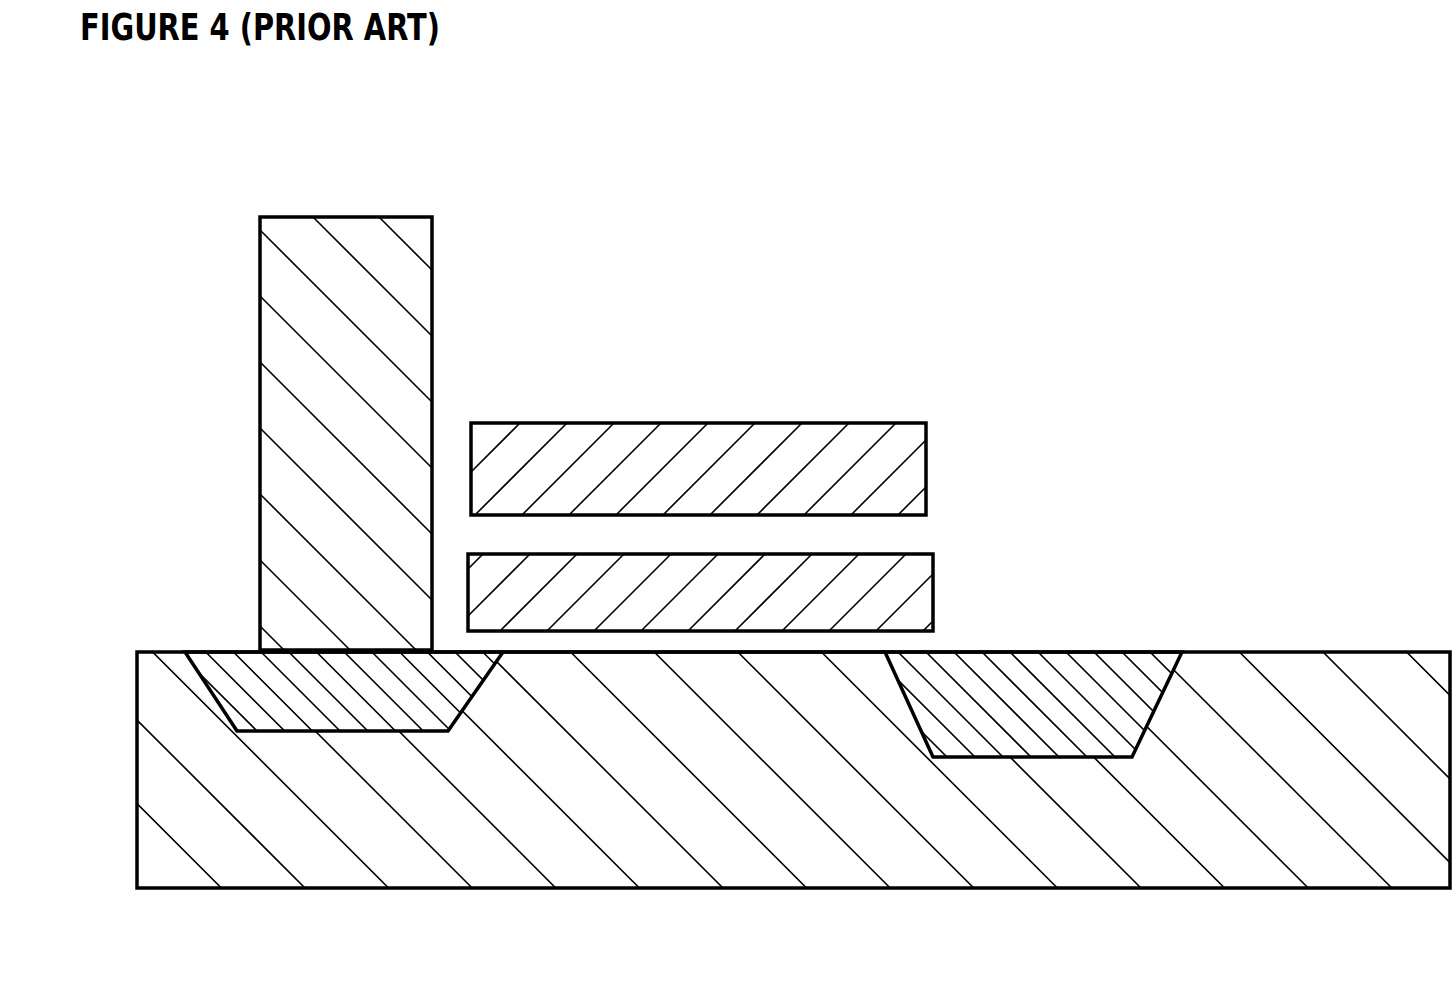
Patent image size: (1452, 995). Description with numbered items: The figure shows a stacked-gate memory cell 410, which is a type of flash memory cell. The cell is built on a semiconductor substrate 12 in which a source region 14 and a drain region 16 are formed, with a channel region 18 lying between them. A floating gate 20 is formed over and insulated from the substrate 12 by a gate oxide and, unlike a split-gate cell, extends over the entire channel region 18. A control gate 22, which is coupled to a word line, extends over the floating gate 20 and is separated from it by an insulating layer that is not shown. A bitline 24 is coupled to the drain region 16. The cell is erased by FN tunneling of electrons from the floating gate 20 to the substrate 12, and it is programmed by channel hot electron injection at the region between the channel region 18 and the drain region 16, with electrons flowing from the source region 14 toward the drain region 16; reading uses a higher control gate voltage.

The stacked-gate memory cell 410 is at (798, 182).
The semiconductor substrate 12 is at (793, 770).
The source region 14 is at (1033, 704).
The drain region 16 is at (344, 691).
The channel region 18 is at (694, 675).
The floating gate 20 is at (700, 592).
The control gate 22 is at (698, 469).
The bitline 24 is at (346, 433).